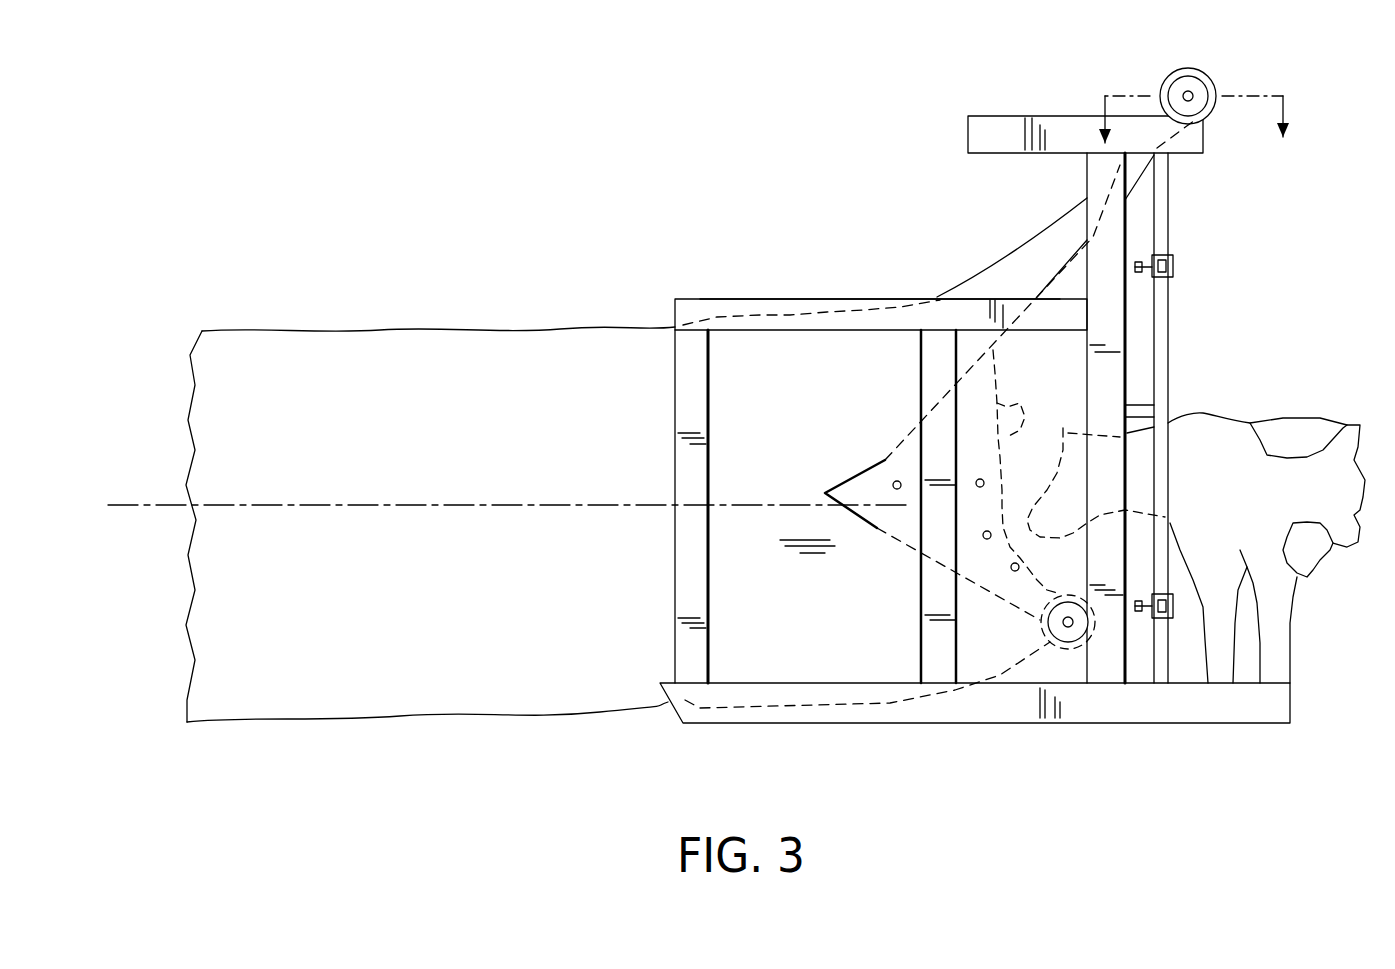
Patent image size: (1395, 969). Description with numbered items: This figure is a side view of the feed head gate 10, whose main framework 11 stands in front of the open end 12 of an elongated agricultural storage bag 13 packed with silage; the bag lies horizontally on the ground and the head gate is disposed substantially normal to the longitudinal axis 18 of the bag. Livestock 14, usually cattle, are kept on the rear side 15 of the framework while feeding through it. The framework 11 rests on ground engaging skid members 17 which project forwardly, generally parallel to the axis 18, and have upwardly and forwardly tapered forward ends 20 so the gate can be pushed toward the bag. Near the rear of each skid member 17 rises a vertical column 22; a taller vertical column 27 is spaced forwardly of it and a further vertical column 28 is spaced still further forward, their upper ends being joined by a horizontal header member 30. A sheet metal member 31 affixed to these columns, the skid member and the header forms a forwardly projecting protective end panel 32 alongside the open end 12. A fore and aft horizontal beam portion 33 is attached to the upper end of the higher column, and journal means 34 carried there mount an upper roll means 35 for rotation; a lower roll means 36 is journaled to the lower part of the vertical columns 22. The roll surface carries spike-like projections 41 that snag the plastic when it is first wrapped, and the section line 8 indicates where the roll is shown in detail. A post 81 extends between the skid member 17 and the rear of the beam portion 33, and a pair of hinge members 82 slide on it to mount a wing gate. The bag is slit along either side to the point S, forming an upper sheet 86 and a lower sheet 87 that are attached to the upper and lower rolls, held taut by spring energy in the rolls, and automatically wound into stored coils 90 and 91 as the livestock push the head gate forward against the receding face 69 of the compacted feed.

The feed head gate 10 is at (903, 188).
The main framework 11 is at (1127, 237).
The open end 12 is at (890, 522).
The agricultural storage bag 13 is at (455, 323).
The livestock 14 is at (1303, 417).
The rear side 15 is at (1263, 370).
The skid member 17 is at (1082, 705).
The longitudinal axis 18 is at (445, 505).
The tapered forward end 20 is at (683, 716).
The vertical column 22 is at (1110, 322).
The vertical column 27 is at (935, 393).
The vertical column 28 is at (697, 410).
The horizontal header member 30 is at (775, 305).
The sheet metal member 31 is at (800, 607).
The protective end panel 32 is at (872, 297).
The horizontal beam portion 33 is at (1028, 128).
The journal means 34 is at (1313, 163).
The upper roll means 35 is at (1200, 92).
The lower roll means 36 is at (1090, 635).
The spike-like projection 41 is at (1188, 72).
The face of compacted feed 69 is at (947, 414).
The post 81 is at (1170, 297).
The hinge member 82 is at (1173, 268).
The upper sheet 86 is at (1137, 167).
The lower sheet 87 is at (998, 647).
The wound up storage of upper sheet 90 is at (1207, 77).
The wound up storage of lower sheet 91 is at (1043, 605).
The section line 8- 8 is at (1193, 112).
The slit end point S is at (825, 493).